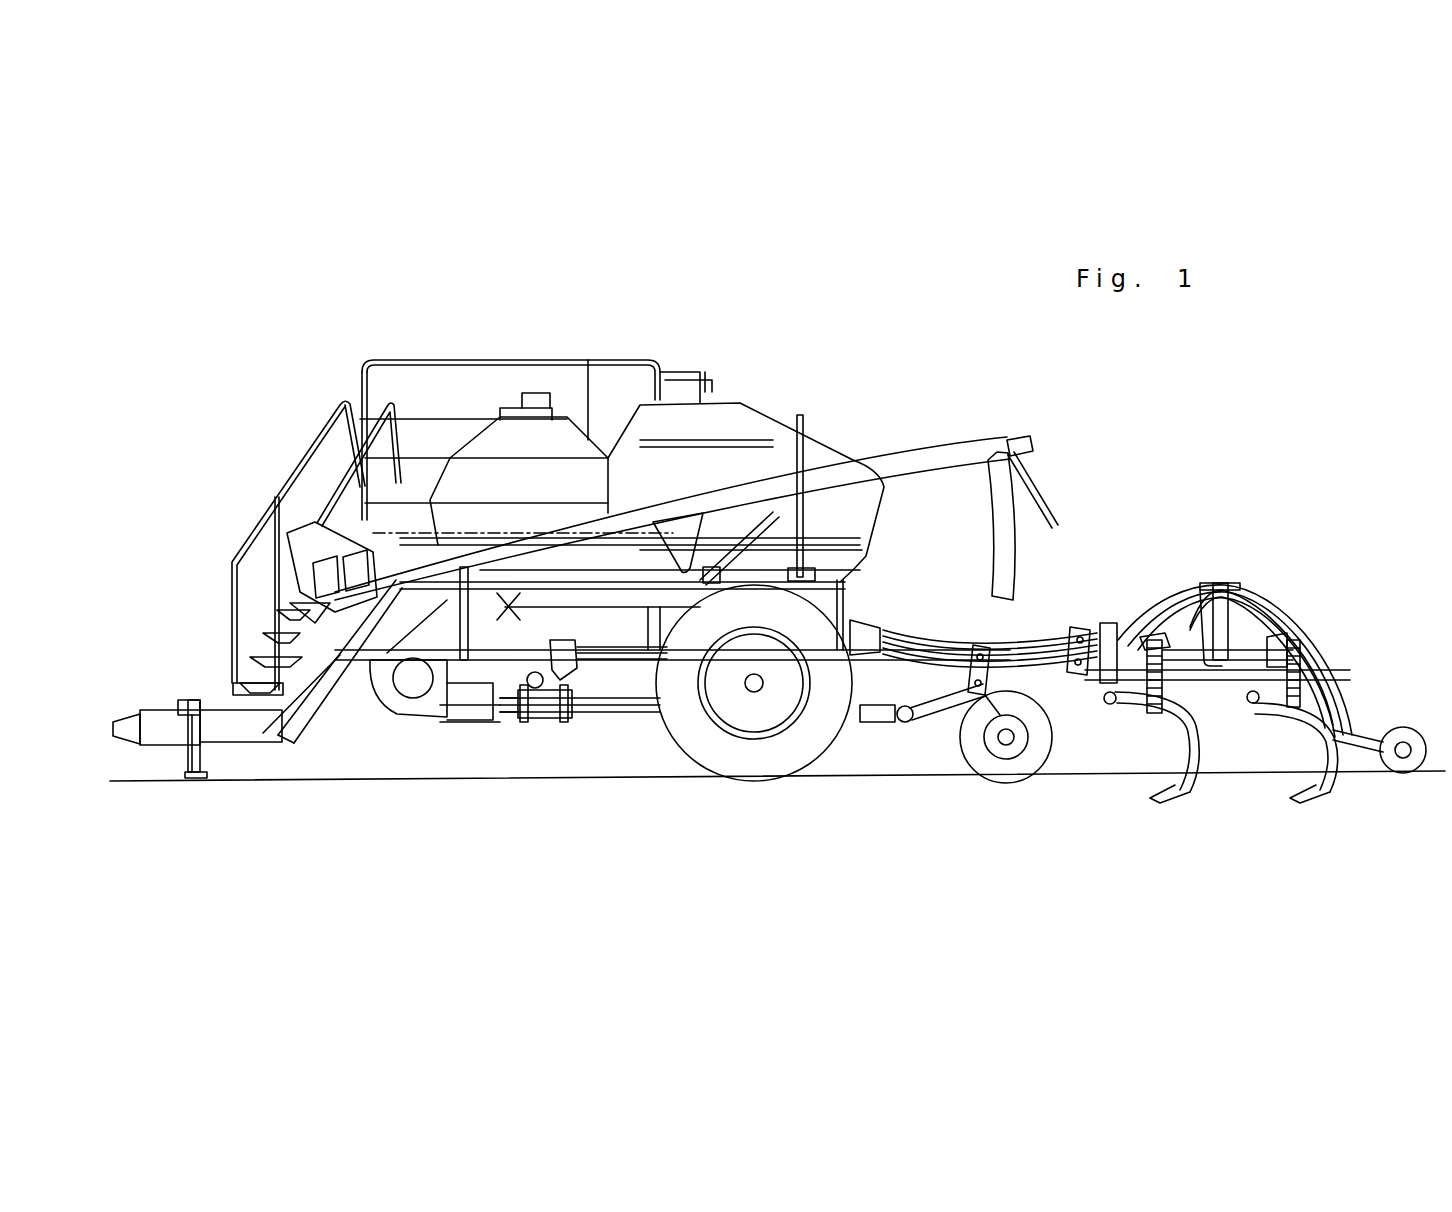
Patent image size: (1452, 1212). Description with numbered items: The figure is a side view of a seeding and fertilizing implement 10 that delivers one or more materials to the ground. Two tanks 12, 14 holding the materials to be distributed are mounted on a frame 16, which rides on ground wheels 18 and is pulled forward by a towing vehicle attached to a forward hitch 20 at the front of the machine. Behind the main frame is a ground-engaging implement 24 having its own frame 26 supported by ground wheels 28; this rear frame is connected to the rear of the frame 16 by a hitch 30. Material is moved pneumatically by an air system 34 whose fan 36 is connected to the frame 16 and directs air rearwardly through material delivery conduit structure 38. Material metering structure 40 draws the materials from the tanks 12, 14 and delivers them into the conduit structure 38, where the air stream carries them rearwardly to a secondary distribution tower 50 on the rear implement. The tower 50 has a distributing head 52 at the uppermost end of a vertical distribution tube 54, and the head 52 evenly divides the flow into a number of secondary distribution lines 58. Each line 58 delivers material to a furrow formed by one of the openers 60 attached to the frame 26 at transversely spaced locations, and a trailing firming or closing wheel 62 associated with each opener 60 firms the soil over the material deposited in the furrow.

The seeding and fertilizing implement 10 is at (748, 318).
The tank 12 is at (487, 478).
The tank 14 is at (722, 463).
The frame 16 is at (353, 662).
The ground wheels 18 is at (800, 752).
The forward hitch 20 is at (160, 716).
The ground-engaging implement 24 is at (1255, 651).
The frame 26 is at (1230, 672).
The ground wheels 28 is at (1007, 783).
The hitch 30 is at (905, 722).
The air system 34 is at (471, 730).
The fan 36 is at (408, 692).
The material delivery conduit structure 38 is at (546, 702).
The material metering structure 40 is at (582, 682).
The secondary distribution tower 50 is at (1264, 566).
The distributing head 52 is at (1220, 585).
The vertical distribution tube 54 is at (1225, 632).
The secondary distribution lines 58 is at (1283, 622).
The openers 60 is at (1340, 762).
The firming or closing wheel 62 is at (1400, 733).